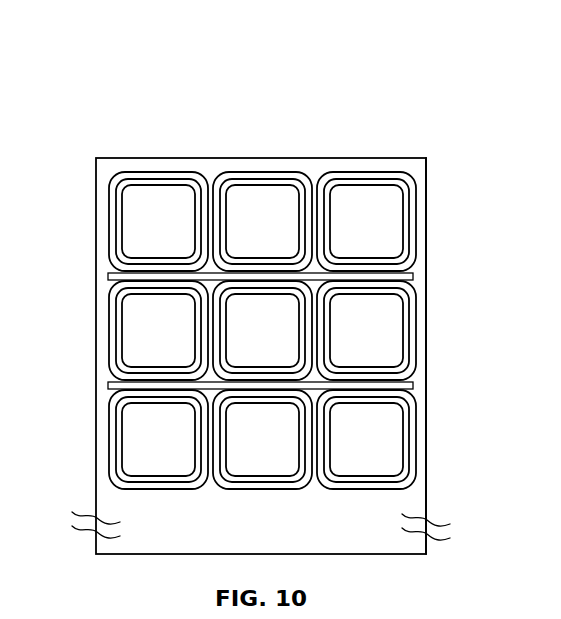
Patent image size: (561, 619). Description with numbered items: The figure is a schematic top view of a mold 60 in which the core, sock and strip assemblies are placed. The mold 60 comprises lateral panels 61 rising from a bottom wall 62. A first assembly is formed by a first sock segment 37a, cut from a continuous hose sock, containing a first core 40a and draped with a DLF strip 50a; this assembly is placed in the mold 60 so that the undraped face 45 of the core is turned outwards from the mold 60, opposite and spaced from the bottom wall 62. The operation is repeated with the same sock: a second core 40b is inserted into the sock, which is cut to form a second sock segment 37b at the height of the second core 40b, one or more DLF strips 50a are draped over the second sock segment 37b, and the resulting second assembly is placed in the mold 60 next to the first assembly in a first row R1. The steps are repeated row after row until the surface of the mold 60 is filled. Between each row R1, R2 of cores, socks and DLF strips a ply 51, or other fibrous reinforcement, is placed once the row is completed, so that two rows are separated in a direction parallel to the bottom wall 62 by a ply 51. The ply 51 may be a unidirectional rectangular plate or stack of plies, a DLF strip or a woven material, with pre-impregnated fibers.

The mold 60 is at (118, 42).
The DLF strip 50a is at (122, 175).
The first sock segment 37a is at (200, 177).
The second sock segment 37b is at (287, 182).
The first core 40a is at (148, 193).
The second core 40b is at (265, 185).
The undraped face 45 is at (373, 211).
The first row R1 is at (384, 237).
The second row R2 is at (380, 345).
The ply 51 is at (411, 276).
The lateral panels 61 is at (427, 372).
The bottom wall 62 is at (402, 506).